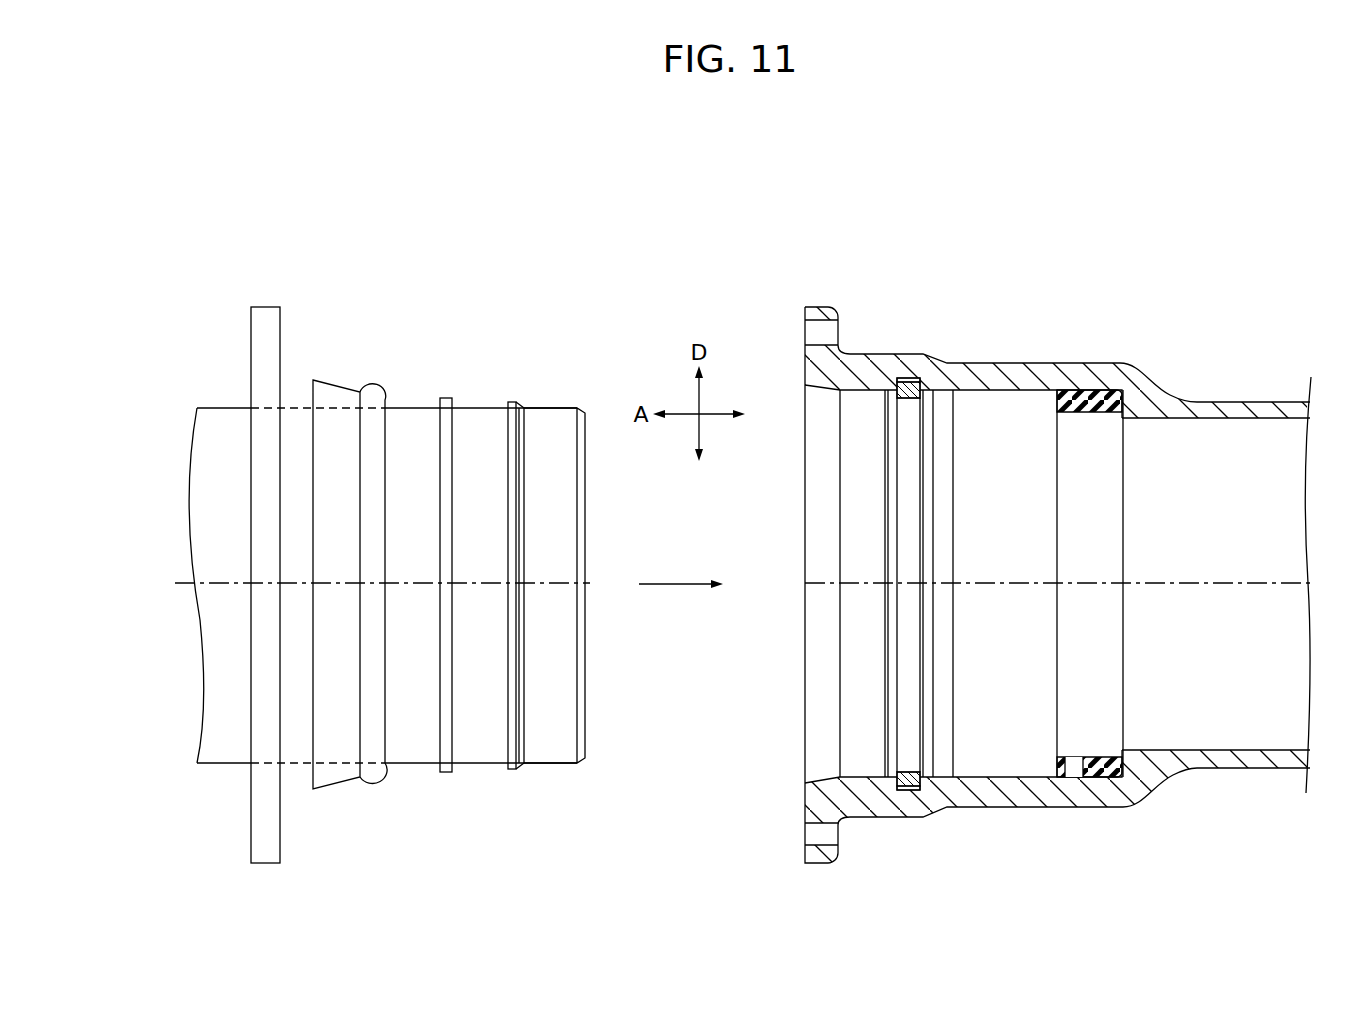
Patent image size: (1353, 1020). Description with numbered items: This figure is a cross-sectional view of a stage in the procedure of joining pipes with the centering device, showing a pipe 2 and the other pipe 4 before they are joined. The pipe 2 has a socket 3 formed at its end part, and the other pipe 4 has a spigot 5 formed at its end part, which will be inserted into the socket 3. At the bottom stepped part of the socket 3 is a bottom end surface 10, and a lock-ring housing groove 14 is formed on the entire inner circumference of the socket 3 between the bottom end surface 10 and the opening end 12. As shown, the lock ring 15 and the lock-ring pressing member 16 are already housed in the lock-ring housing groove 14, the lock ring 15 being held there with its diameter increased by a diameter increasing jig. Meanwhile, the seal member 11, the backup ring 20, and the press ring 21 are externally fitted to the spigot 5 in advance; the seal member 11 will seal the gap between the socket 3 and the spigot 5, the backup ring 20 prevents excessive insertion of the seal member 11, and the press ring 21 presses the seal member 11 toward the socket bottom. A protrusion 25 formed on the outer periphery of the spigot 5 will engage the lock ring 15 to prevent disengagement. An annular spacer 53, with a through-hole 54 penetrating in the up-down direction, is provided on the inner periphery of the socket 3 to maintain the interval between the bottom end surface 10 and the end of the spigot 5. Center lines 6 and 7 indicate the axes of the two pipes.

The pipe 2 is at (1247, 401).
The socket 3 is at (1017, 365).
The pipe 4 is at (211, 407).
The spigot 5 is at (564, 412).
The housing axis 6 is at (1226, 582).
The shaft axis 7 is at (172, 583).
The bottom end surface 10 is at (1123, 416).
The seal member 11 is at (327, 390).
The opening end 12 is at (803, 732).
The lock-ring housing groove 14 is at (910, 791).
The lock ring 15 is at (910, 384).
The lock-ring pressing member 16 is at (905, 379).
The backup ring 20 is at (447, 395).
The press ring 21 is at (268, 312).
The protrusion 25 is at (511, 398).
The spacer 53 is at (1055, 392).
The through-hole 54 is at (1067, 756).